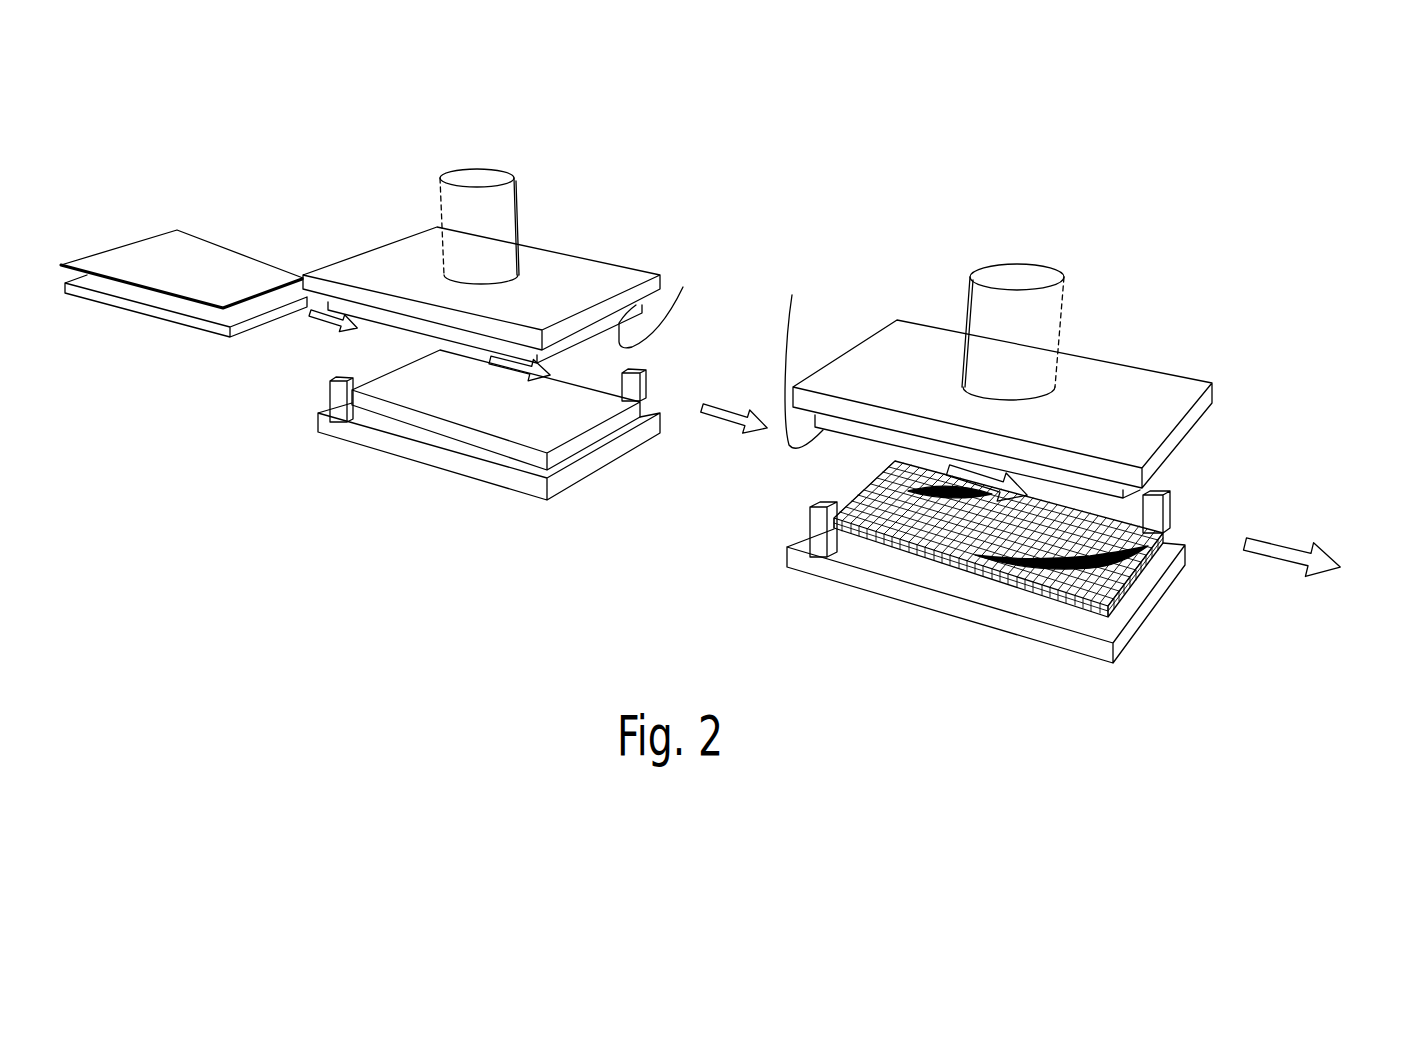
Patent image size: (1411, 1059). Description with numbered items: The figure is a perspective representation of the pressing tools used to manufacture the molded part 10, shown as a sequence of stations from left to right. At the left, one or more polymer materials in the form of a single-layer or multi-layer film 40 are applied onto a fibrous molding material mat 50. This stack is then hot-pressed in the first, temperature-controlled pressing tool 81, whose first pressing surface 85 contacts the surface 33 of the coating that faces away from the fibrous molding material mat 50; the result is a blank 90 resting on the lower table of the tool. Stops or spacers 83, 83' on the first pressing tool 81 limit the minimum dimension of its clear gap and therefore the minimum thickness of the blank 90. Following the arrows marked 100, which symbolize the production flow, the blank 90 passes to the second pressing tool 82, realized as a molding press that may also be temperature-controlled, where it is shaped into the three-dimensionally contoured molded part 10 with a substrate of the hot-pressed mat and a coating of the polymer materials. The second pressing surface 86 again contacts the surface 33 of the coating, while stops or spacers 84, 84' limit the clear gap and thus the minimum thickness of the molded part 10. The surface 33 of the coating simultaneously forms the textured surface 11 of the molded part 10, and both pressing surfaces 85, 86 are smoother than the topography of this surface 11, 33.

The molded part 10 is at (945, 572).
The surface of the molded part 11 is at (1067, 590).
The surface of the coating 33 is at (543, 435).
The film 40 is at (193, 255).
The fibrous molding material mat 50 is at (192, 320).
The first pressing tool 81 is at (557, 213).
The second pressing tool 82 is at (1093, 315).
The stop or spacer 83 is at (290, 399).
The stop or spacer 83' is at (683, 368).
The stop or spacer 84 is at (791, 557).
The stop or spacer 84' is at (1206, 500).
The first pressing surface 85 is at (683, 287).
The second pressing surface 86 is at (802, 356).
The blank 90 is at (423, 432).
The production flow 100 is at (735, 423).